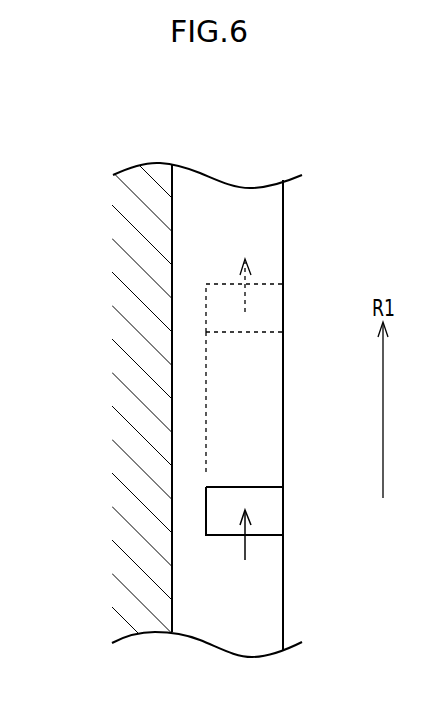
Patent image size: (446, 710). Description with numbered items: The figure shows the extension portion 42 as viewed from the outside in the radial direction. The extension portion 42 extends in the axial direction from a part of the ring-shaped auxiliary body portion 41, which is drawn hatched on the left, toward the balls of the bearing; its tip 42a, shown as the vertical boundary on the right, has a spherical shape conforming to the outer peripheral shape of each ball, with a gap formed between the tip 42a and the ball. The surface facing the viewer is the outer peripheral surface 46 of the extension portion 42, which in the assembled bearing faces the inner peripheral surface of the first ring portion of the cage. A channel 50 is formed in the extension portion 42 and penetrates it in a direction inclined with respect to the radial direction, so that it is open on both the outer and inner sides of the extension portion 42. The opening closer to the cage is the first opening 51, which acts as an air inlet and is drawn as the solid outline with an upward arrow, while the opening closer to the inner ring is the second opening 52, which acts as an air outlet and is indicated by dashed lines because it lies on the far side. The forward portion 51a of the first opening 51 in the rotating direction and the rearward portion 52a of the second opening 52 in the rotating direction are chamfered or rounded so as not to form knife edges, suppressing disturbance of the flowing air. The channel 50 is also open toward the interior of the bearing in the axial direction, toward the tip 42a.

The auxiliary body portion 41 is at (125, 260).
The extension portion 42 is at (193, 188).
The tip of the extension portion 42a is at (283, 228).
The outer peripheral surface of the extension portion 46 is at (270, 592).
The channel 50 is at (280, 407).
The first opening 51 is at (278, 515).
The forward portion of the first opening 51a is at (265, 488).
The second opening 52 is at (280, 304).
The rearward portion of the second opening 52a is at (270, 328).